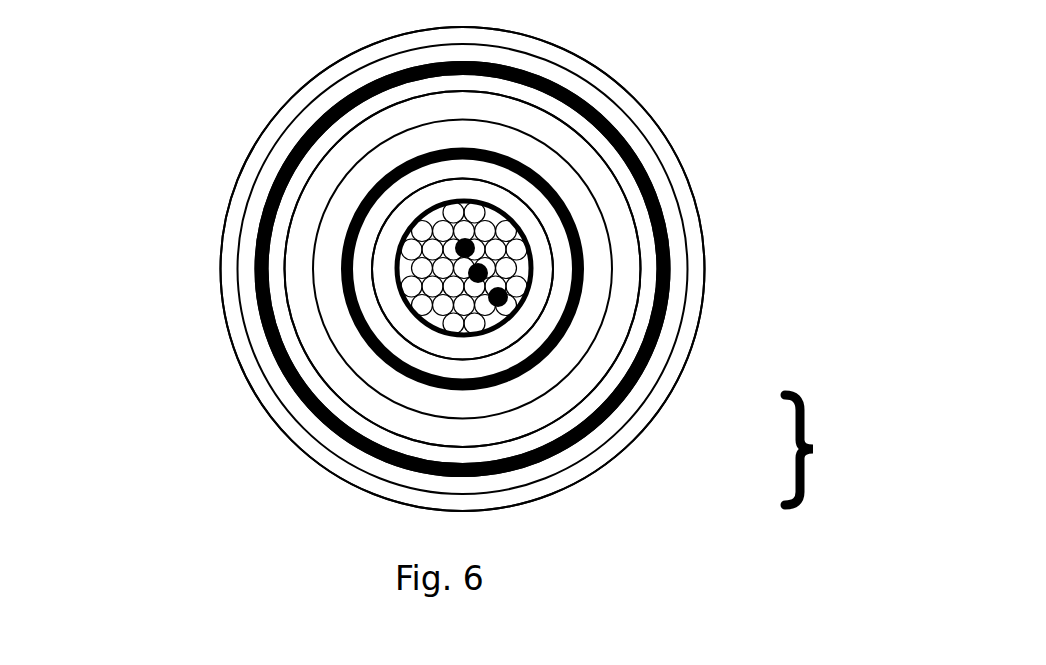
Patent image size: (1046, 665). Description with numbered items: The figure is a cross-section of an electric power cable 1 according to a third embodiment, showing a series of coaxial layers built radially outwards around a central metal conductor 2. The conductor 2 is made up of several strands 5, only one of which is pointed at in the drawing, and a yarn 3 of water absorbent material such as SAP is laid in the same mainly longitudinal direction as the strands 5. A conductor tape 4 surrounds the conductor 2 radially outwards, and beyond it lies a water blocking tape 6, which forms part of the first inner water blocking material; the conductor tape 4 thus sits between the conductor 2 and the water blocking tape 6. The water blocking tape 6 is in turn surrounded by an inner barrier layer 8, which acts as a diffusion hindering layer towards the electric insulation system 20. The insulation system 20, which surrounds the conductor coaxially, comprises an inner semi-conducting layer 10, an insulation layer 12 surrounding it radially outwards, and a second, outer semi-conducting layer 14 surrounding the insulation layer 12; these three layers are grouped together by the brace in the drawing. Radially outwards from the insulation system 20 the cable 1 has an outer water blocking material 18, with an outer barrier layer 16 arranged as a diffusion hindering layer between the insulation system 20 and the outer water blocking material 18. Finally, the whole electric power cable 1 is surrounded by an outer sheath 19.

The electric power cable 1 is at (645, 83).
The conductor 2 is at (522, 215).
The yarn 3 is at (554, 249).
The conductor tape 4 is at (546, 257).
The strands 5 is at (466, 209).
The water blocking tape 6 is at (570, 282).
The inner barrier layer 8 is at (570, 328).
The inner semi-conducting layer 10 is at (570, 367).
The insulation layer 12 is at (553, 396).
The outer semi-conducting layer 14 is at (535, 442).
The outer barrier layer 16 is at (278, 373).
The outer water blocking material 18 is at (253, 307).
The outer sheath 19 is at (224, 233).
The electric insulation system 20 is at (830, 448).